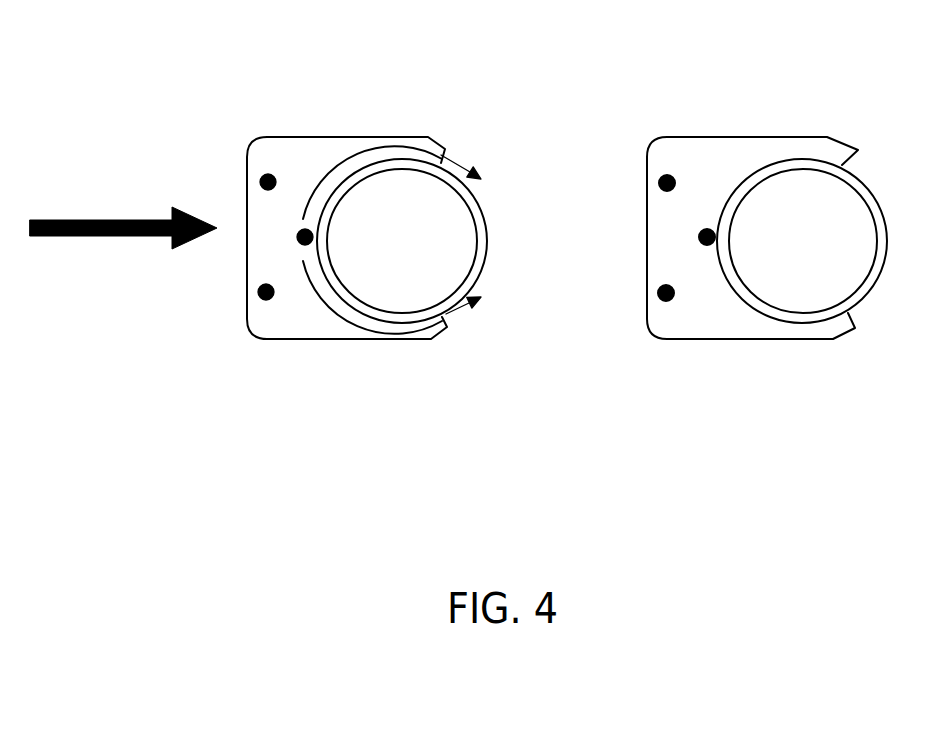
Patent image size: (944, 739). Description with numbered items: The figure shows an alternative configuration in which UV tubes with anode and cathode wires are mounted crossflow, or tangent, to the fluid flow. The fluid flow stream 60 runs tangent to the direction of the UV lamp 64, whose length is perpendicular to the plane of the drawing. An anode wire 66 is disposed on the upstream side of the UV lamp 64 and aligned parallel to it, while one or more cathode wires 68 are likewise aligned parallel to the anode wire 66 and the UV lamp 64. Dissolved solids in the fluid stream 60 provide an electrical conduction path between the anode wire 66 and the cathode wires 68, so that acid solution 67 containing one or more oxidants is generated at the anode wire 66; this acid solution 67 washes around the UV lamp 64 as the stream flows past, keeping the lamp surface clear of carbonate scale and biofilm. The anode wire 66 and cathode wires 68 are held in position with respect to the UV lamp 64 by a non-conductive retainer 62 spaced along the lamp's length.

The fluid flow stream 60 is at (127, 217).
The non-conductive retainer 62 is at (300, 173).
The UV lamp 64 is at (485, 203).
The anode wire 66 is at (304, 244).
The acid solution 67 is at (457, 157).
The cathode wires 68 is at (262, 188).